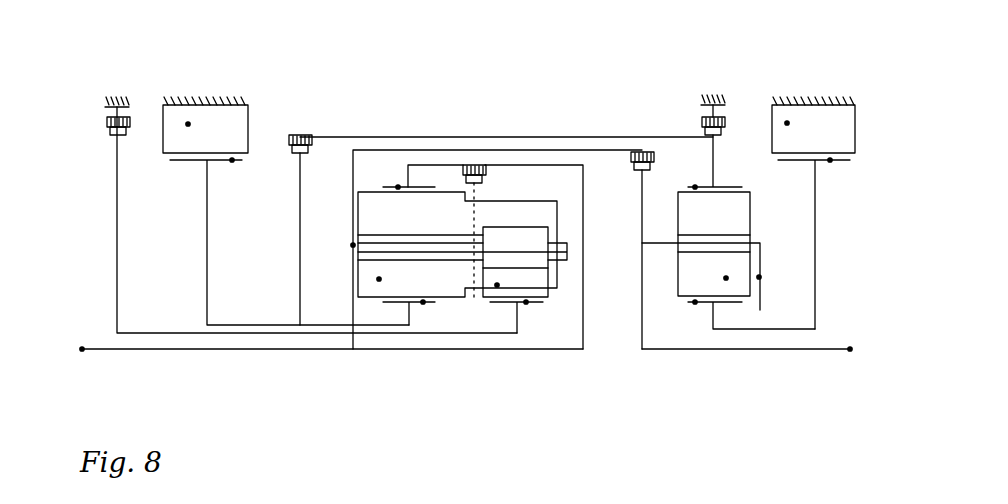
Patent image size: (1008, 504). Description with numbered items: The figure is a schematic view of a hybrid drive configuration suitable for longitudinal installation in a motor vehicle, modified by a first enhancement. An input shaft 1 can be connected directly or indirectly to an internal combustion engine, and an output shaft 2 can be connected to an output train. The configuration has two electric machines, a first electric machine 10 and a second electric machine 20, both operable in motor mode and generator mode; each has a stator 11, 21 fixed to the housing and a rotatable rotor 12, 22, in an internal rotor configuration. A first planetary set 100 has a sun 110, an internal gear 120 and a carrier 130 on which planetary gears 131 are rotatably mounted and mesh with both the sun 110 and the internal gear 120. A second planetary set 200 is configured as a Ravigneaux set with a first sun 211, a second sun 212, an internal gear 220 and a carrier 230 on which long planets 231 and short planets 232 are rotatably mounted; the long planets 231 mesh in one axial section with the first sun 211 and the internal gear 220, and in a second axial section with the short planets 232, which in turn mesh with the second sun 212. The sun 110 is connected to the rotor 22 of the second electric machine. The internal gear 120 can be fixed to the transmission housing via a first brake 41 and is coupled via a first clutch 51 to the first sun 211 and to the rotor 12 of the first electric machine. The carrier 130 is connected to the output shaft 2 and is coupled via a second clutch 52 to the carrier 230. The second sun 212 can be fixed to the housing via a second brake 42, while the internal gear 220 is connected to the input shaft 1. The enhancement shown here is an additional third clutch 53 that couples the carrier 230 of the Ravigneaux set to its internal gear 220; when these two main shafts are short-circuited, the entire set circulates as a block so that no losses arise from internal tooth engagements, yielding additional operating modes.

The input shaft 1 is at (80, 351).
The output shaft 2 is at (852, 351).
The first electric machine 10 is at (208, 78).
The stator 11 is at (188, 122).
The rotor 12 is at (233, 158).
The second electric machine 20 is at (809, 78).
The stator 21 is at (787, 121).
The rotor 22 is at (831, 158).
The first brake 41 is at (713, 94).
The second brake 42 is at (118, 96).
The first clutch 51 is at (300, 134).
The second clutch 52 is at (641, 151).
The third clutch 53 is at (476, 164).
The first planetary set 100 is at (713, 342).
The sun 110 is at (695, 304).
The internal gear 120 is at (695, 185).
The carrier 130 is at (760, 279).
The planetary gears 131 is at (727, 280).
The second planetary set 200 is at (462, 322).
The first sun 211 is at (423, 304).
The second sun 212 is at (527, 304).
The internal gear 220 is at (398, 185).
The carrier 230 is at (352, 247).
The long planets 231 is at (379, 281).
The short planets 232 is at (497, 287).